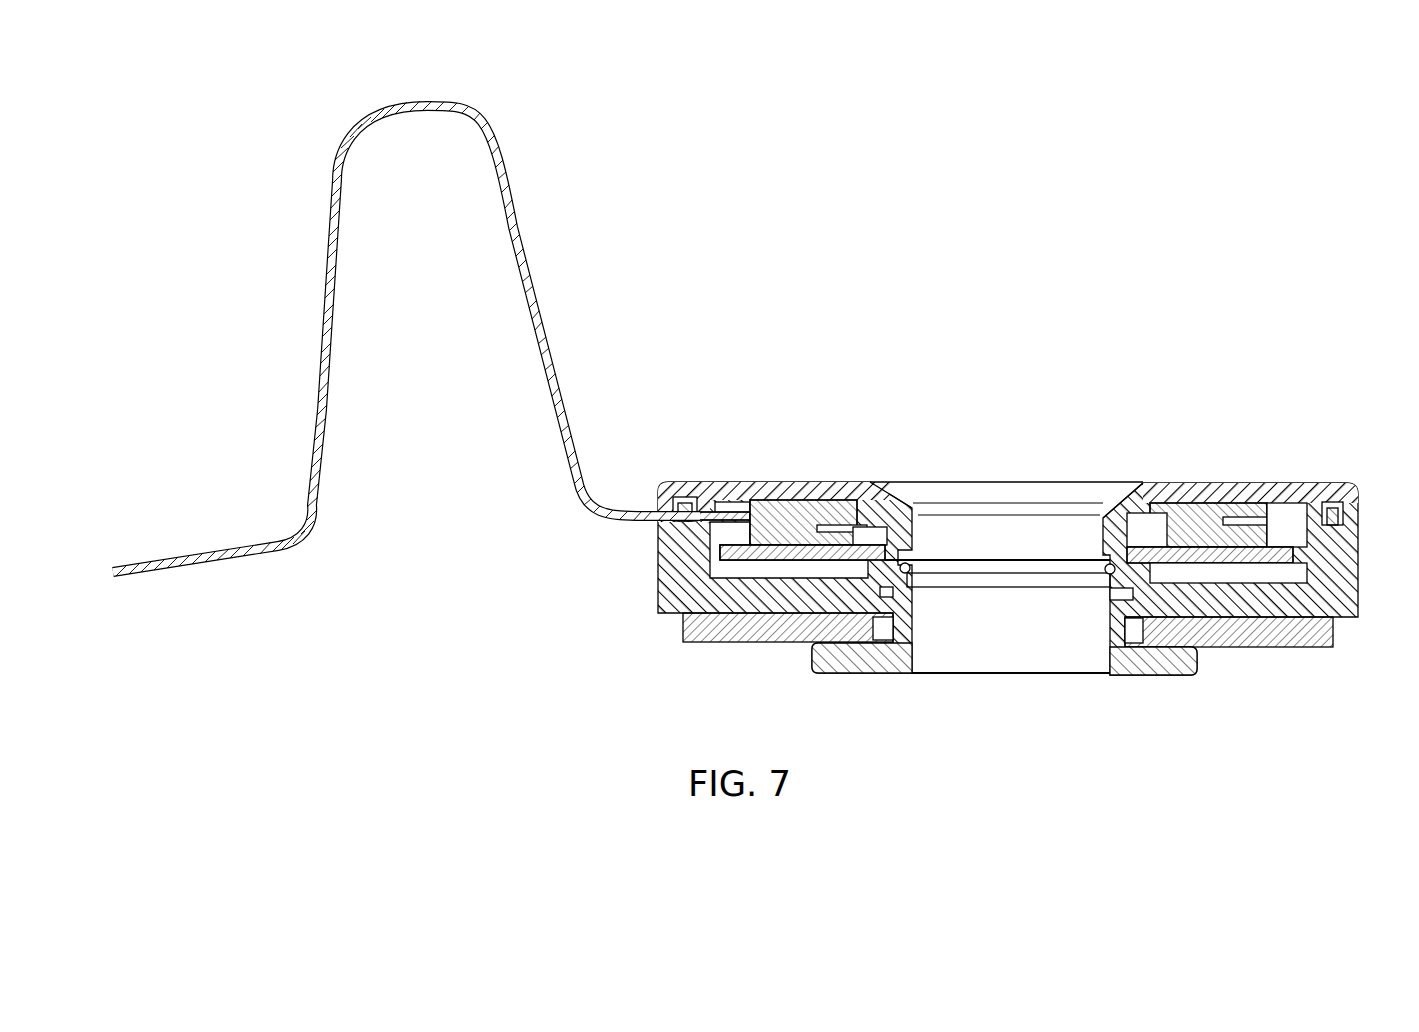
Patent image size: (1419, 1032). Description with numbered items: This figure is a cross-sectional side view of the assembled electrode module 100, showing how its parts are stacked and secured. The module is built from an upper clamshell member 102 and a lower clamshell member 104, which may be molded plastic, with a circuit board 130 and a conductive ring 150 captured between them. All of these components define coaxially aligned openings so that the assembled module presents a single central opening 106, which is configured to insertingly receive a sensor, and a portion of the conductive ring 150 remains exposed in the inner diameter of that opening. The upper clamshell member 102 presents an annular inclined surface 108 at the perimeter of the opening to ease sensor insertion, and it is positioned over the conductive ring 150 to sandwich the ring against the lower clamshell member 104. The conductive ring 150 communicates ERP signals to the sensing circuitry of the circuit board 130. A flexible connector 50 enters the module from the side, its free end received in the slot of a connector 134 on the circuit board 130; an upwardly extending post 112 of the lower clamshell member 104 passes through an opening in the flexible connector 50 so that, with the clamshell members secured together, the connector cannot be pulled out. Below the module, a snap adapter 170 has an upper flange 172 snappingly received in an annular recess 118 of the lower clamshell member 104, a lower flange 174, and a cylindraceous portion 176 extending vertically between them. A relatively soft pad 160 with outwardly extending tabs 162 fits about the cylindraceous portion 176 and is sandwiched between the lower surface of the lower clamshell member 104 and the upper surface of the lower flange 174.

The flexible connector 50 is at (536, 266).
The electrode module 100 is at (1228, 318).
The upper clamshell member 102 is at (1290, 488).
The lower clamshell member 104 is at (1358, 570).
The central opening 106 is at (1047, 470).
The annular inclined surface 108 is at (897, 489).
The post 112 is at (683, 497).
The annular recess 118 is at (883, 594).
The circuit board 130 is at (718, 553).
The connector 134 is at (805, 512).
The conductive ring 150 is at (1028, 567).
The pad 160 is at (736, 660).
The tab 162 is at (683, 628).
The snap adapter 170 is at (1072, 692).
The upper flange 172 is at (1136, 598).
The lower flange 174 is at (1155, 676).
The cylindraceous portion 176 is at (870, 628).